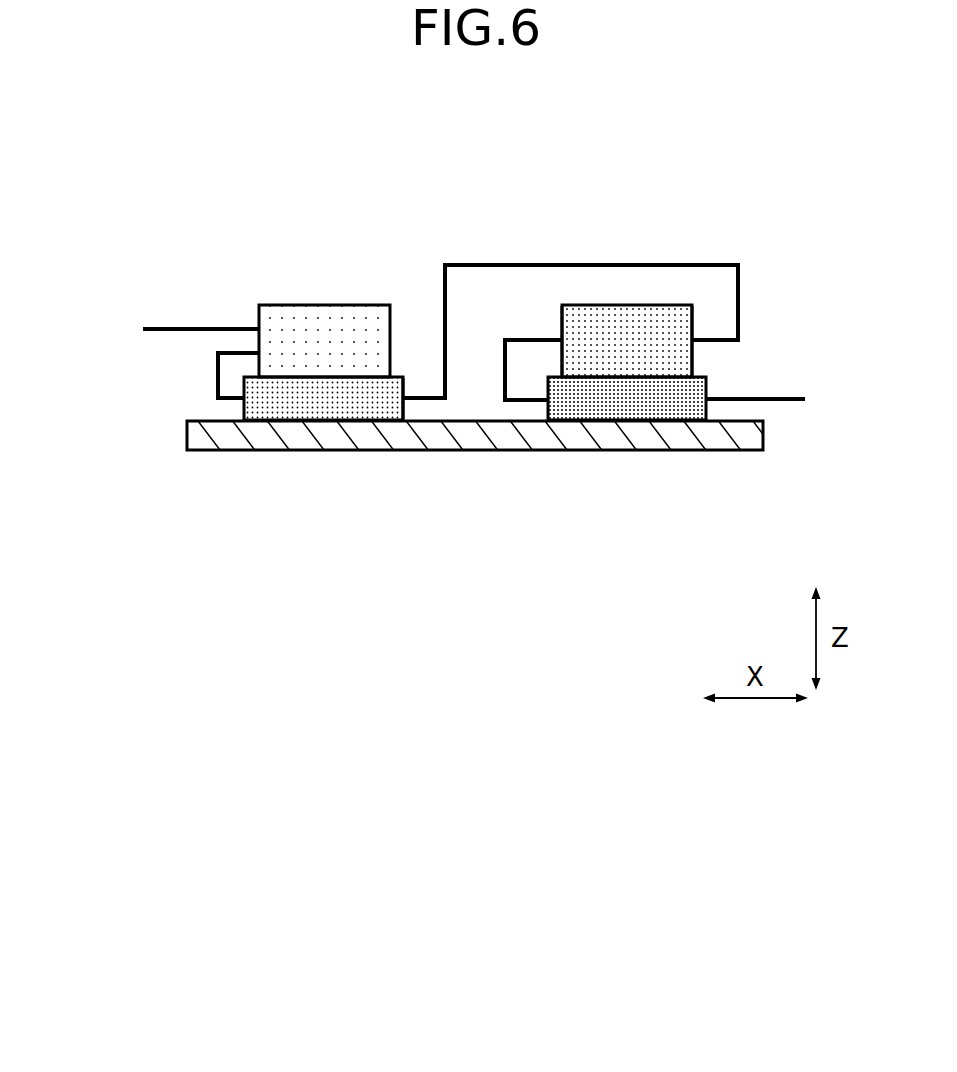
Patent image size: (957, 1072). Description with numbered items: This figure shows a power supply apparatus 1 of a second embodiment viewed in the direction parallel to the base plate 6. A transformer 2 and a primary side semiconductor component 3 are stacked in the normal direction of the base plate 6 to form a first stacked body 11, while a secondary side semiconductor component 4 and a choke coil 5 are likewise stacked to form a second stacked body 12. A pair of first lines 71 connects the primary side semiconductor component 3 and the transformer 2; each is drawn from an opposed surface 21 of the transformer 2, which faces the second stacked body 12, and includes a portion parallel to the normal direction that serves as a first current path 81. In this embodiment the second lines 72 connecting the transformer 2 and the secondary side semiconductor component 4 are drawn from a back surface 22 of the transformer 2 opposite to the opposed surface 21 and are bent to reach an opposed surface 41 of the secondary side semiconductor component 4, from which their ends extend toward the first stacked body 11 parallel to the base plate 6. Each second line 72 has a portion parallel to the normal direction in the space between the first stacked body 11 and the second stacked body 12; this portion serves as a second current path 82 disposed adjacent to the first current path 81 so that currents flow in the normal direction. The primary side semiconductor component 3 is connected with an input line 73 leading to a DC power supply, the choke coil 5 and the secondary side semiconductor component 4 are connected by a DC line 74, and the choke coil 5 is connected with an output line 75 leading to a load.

The power supply apparatus 1 is at (461, 334).
The transformer 2 is at (610, 320).
The primary side semiconductor component 3 is at (617, 400).
The secondary side semiconductor component 4 is at (288, 403).
The choke coil 5 is at (360, 320).
The base plate 6 is at (687, 438).
The first stacked body 11 is at (658, 347).
The second stacked body 12 is at (252, 356).
The opposed surface 21 is at (548, 338).
The back surface 22 is at (695, 360).
The opposed surface 41 is at (403, 408).
The first line 71 is at (530, 338).
The second line 72 is at (435, 402).
The input line 73 is at (792, 403).
The DC line 74 is at (217, 375).
The output line 75 is at (182, 328).
The first current path 81 is at (503, 388).
The second current path 82 is at (442, 294).